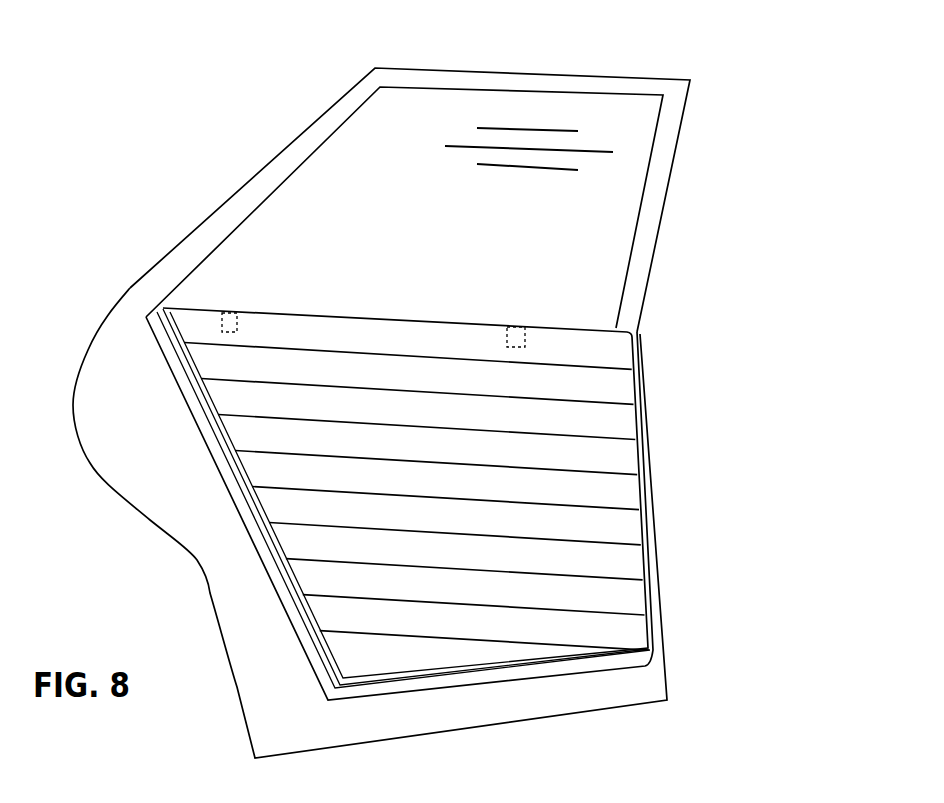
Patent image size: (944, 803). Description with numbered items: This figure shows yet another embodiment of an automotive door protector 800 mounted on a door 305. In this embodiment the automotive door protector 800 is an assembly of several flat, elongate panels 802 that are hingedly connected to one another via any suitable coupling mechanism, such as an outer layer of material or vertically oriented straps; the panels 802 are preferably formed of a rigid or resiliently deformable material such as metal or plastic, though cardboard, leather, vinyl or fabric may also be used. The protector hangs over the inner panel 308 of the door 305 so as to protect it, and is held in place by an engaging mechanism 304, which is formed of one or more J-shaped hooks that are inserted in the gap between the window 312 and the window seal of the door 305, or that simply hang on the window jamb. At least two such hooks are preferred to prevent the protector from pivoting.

The door 305 is at (562, 72).
The window 312 is at (350, 143).
The engaging mechanism 304 is at (237, 323).
The automotive door protector 800 is at (422, 342).
The panels 802 is at (600, 393).
The inner panel 308 is at (226, 430).